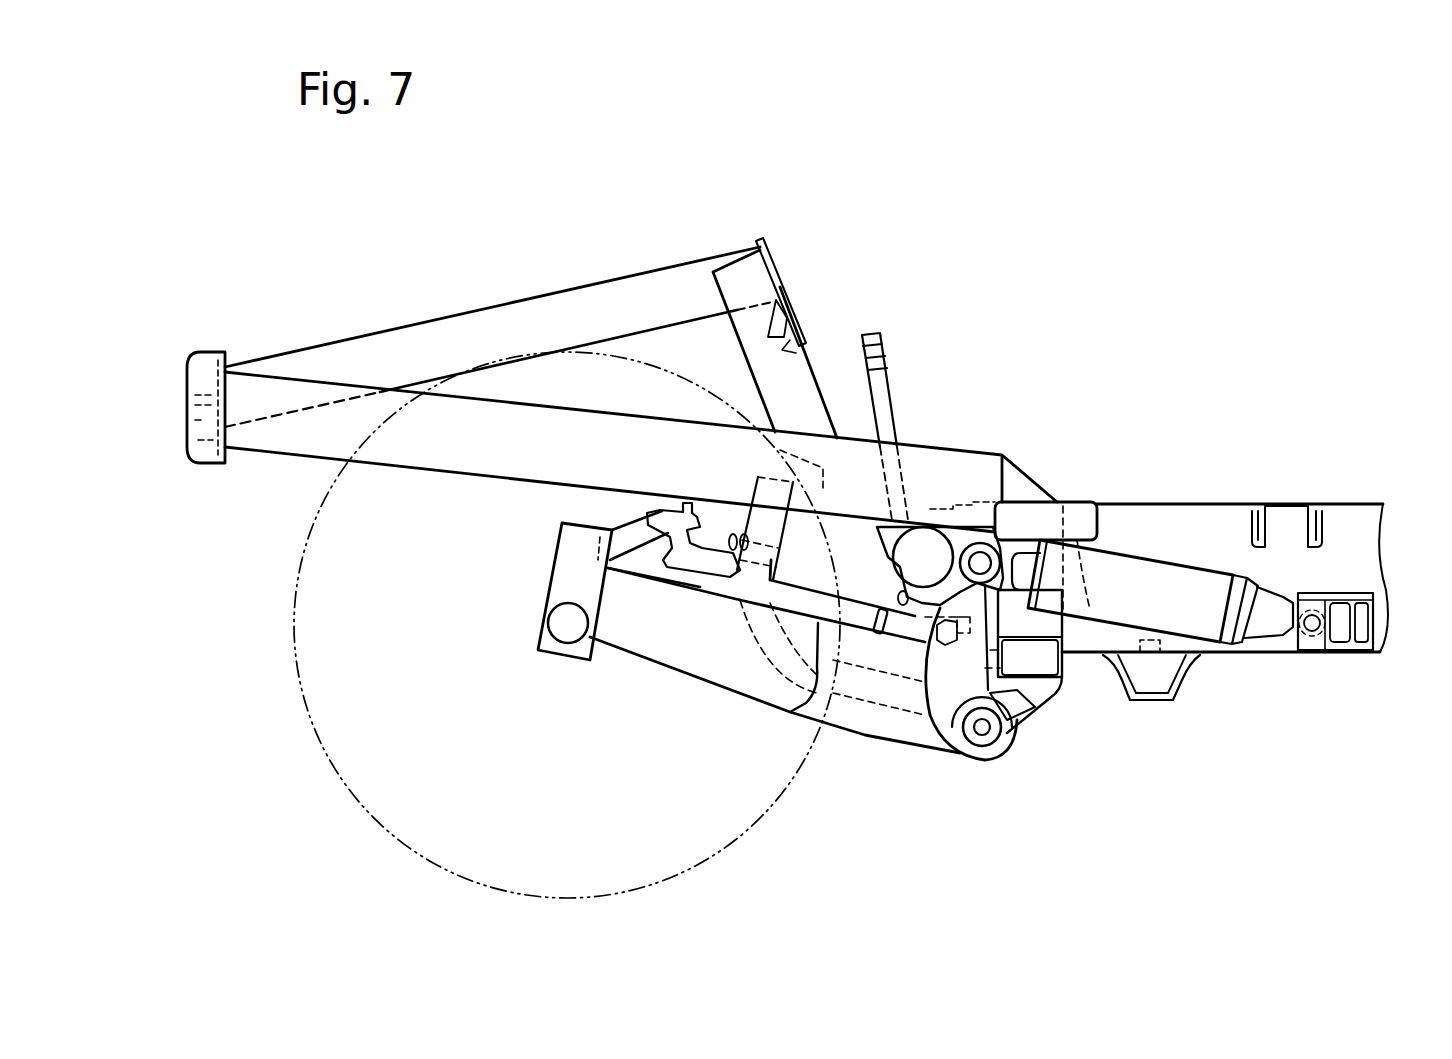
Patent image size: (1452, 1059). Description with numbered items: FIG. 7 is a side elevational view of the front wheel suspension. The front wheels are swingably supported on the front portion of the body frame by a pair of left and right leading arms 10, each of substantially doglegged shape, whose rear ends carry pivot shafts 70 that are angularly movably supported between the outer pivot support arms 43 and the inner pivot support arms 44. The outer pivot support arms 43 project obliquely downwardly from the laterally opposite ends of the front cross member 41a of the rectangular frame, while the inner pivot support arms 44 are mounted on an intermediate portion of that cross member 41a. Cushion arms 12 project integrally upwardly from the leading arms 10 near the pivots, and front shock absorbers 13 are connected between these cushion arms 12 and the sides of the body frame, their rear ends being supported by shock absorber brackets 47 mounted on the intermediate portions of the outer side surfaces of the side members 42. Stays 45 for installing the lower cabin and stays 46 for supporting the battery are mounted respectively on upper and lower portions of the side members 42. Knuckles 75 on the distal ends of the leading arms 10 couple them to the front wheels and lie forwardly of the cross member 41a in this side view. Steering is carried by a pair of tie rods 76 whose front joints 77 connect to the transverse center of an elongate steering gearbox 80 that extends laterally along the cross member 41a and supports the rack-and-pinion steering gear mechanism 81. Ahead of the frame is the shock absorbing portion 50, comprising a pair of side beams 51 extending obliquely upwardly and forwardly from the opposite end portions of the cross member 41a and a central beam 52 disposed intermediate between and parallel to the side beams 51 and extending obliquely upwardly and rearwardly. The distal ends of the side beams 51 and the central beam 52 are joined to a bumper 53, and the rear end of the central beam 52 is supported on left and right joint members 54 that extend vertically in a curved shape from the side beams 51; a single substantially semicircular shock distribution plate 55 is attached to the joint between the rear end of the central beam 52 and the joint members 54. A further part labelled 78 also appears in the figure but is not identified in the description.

The shock absorbing portion 50 is at (338, 290).
The side beams 51 is at (280, 452).
The central beam 52 is at (404, 326).
The bumper 53 is at (205, 350).
The joint members 54 is at (757, 378).
The shock distribution plate 55 is at (770, 250).
The rack-and-pinion steering gear mechanism 81 is at (880, 523).
The front cross member 41a is at (1027, 502).
The front shock absorbers 13 is at (1143, 557).
The side members 42 is at (1197, 512).
The stays 45 is at (1283, 503).
The stays 46 is at (1190, 667).
The shock absorber brackets 47 is at (1340, 630).
The pivot support arms 43 is at (1053, 697).
The pivot support arms 44 is at (793, 525).
The steering gearbox 80 is at (900, 598).
The cushion arms 12 is at (917, 630).
The pivot shafts 70 is at (1000, 748).
The leading arms 10 is at (690, 667).
The tie rods 76 is at (801, 592).
The pin 78 is at (883, 633).
The knuckles 75 is at (553, 588).
The front joints 77 is at (663, 530).